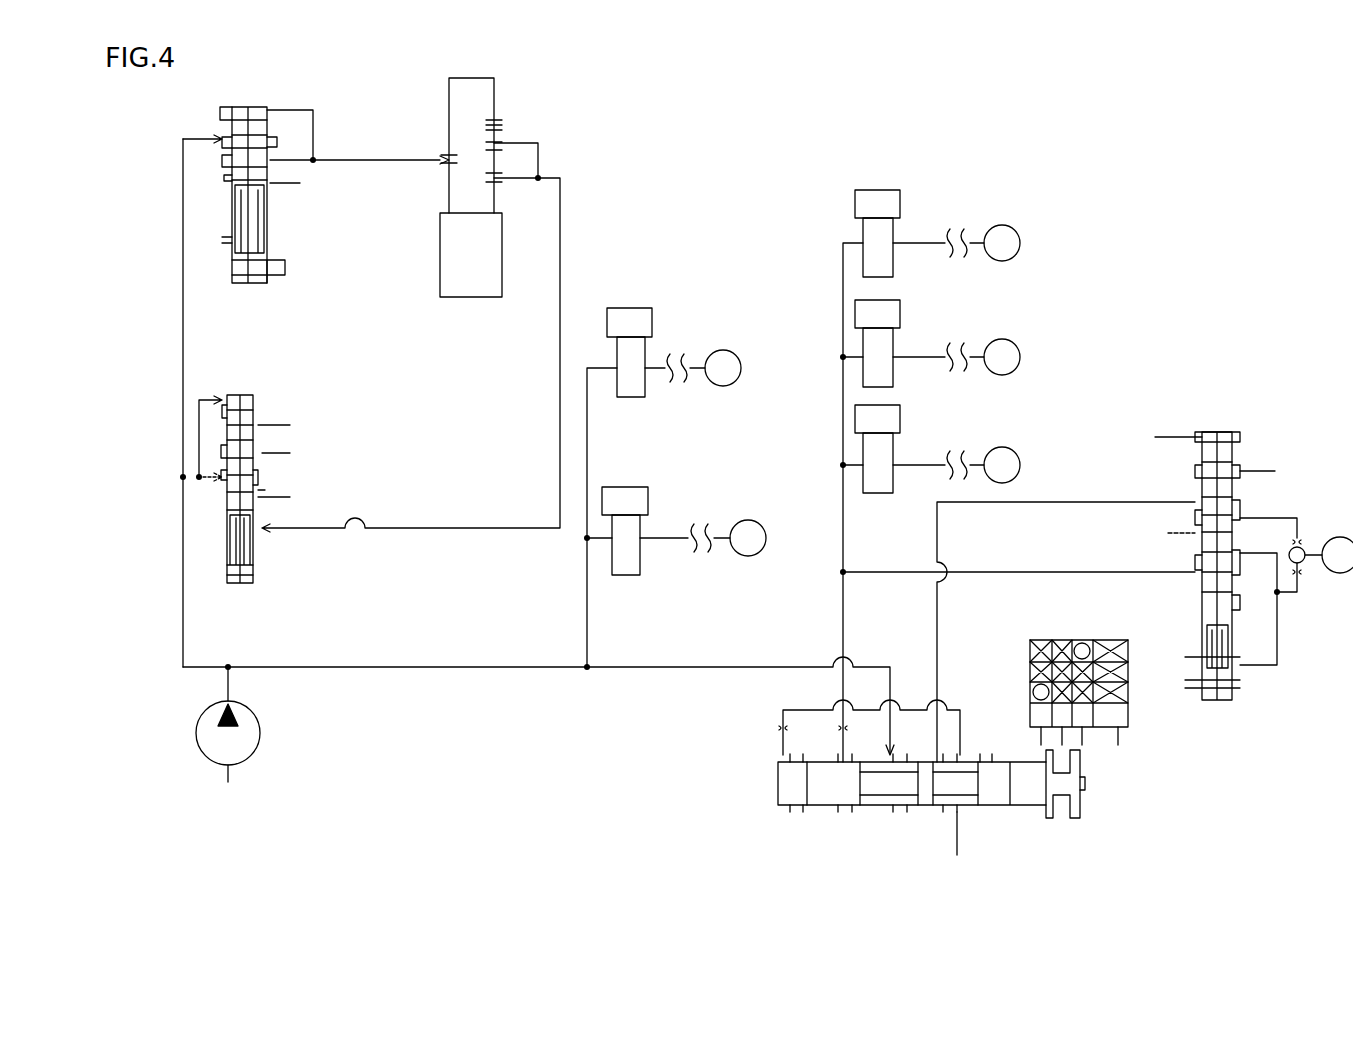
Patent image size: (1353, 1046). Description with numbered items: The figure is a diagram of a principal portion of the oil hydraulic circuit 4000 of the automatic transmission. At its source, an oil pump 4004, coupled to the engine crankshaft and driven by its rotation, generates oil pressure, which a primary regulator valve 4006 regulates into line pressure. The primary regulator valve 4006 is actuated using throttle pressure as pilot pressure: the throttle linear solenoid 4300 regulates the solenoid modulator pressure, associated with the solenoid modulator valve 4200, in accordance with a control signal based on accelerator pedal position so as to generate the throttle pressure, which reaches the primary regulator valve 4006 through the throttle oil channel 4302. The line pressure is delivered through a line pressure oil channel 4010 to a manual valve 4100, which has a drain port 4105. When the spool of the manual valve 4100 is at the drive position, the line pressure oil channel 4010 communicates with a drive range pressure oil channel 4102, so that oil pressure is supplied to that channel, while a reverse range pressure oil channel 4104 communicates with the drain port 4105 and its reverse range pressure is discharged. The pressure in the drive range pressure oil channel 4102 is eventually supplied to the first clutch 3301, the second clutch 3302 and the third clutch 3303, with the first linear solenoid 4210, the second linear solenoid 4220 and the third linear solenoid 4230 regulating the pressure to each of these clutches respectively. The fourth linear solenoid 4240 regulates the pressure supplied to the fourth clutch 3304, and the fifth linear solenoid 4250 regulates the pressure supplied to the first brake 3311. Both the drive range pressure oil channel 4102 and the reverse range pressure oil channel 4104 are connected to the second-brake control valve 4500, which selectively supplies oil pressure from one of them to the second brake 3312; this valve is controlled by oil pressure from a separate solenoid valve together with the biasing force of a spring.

The oil hydraulic circuit 4000 is at (817, 112).
The oil pump 4004 is at (261, 728).
The primary regulator valve 4006 is at (236, 586).
The line pressure oil channel 4010 is at (262, 667).
The manual valve 4100 is at (760, 804).
The D range pressure oil channel 4102 is at (1073, 570).
The R range pressure oil channel 4104 is at (1073, 500).
The drain port 4105 is at (969, 826).
The solenoid modulator valve 4200 is at (252, 292).
The SL1 linear solenoid 4210 is at (900, 208).
The SL2 linear solenoid 4220 is at (900, 328).
The SL3 linear solenoid 4230 is at (900, 436).
The SL4 linear solenoid 4240 is at (630, 308).
The SL5 linear solenoid 4250 is at (648, 506).
The SLT linear solenoid 4300 is at (440, 230).
The SLT oil channel 4302 is at (520, 530).
The B2 control valve 4500 is at (1262, 432).
The C1 clutch 3301 is at (998, 225).
The C2 clutch 3302 is at (1000, 338).
The C3 clutch 3303 is at (1000, 446).
The C4 clutch 3304 is at (716, 350).
The B1 brake 3311 is at (744, 520).
The B2 brake 3312 is at (1336, 574).